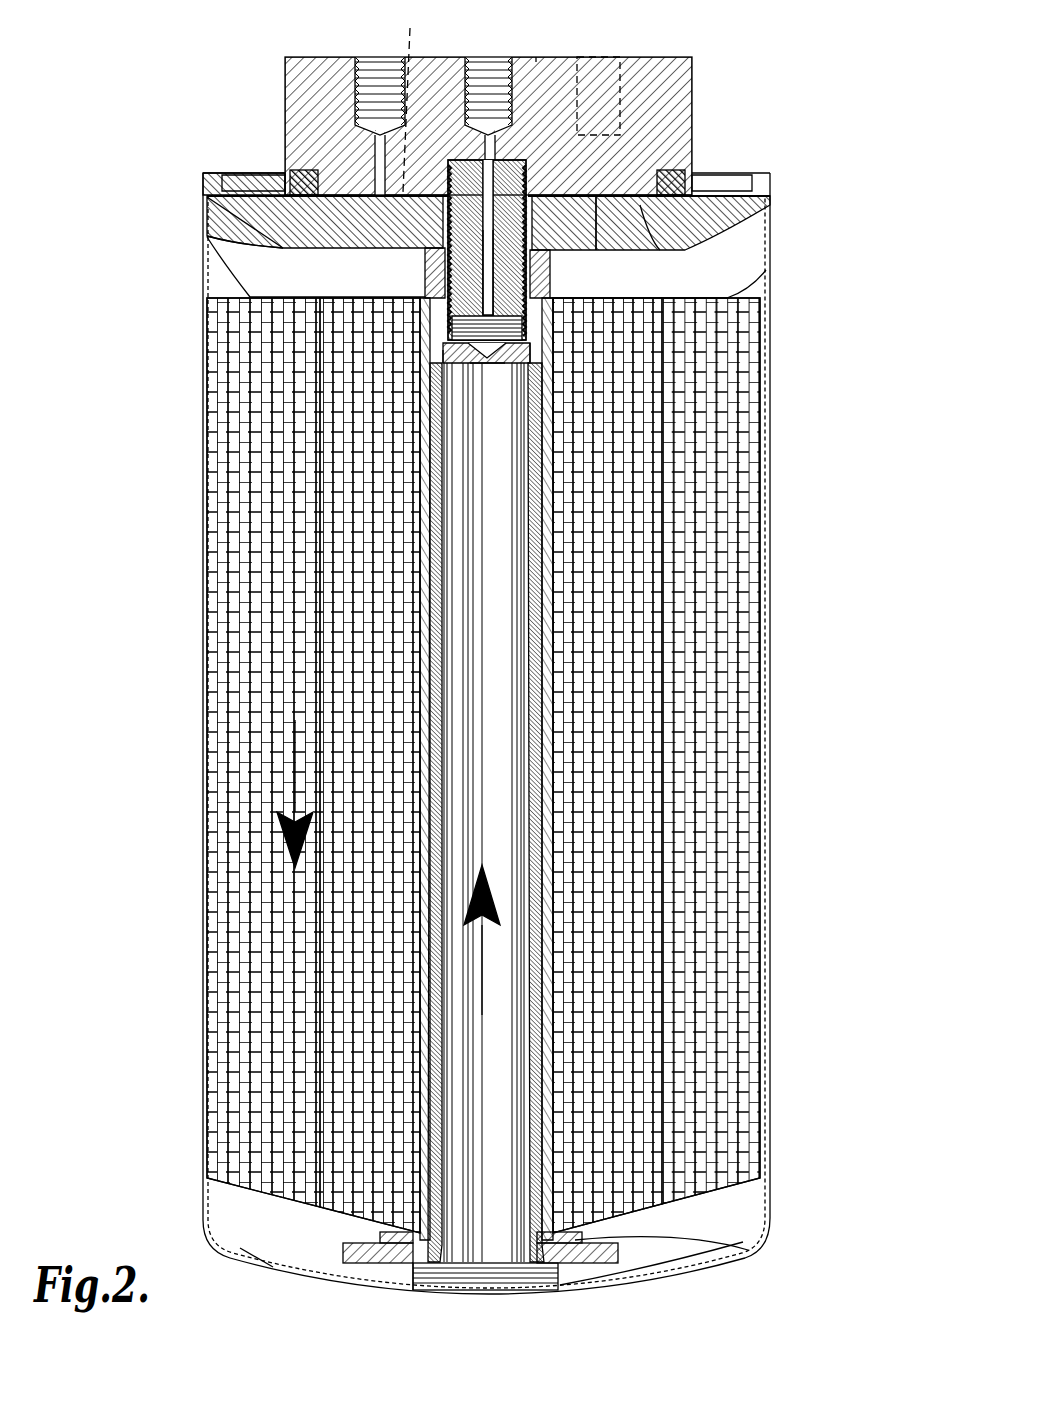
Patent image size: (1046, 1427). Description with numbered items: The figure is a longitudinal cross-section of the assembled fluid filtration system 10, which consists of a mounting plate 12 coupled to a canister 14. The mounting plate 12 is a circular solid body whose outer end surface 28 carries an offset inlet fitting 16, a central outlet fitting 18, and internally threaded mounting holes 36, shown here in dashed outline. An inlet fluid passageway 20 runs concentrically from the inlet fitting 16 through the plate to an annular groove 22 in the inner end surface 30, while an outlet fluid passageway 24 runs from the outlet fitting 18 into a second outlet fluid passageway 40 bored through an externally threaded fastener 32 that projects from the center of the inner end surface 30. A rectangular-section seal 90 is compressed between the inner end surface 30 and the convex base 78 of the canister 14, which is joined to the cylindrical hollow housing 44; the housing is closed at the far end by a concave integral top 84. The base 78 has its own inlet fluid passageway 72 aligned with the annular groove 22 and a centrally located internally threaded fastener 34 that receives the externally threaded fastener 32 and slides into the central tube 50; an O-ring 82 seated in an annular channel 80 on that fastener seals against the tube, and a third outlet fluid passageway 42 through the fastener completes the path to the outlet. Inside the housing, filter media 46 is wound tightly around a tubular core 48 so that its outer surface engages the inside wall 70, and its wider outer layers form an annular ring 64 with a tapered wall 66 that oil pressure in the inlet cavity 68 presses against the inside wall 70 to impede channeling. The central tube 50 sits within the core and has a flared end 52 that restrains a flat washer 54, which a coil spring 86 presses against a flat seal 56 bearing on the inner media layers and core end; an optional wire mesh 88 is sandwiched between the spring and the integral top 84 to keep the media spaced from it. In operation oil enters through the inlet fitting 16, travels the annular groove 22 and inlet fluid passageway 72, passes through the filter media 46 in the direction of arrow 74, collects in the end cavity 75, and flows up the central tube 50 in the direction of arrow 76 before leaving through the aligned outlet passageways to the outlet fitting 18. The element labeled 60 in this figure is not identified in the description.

The fluid filtration system 10 is at (182, 60).
The mounting plate 12 is at (690, 78).
The canister 14 is at (772, 632).
The inlet fitting 16 is at (376, 70).
The outlet fitting 18 is at (483, 70).
The inlet fluid passageway 20 is at (380, 155).
The annular groove 22 is at (409, 96).
The outlet fluid passageway 24 is at (492, 150).
The outer end surface 28 is at (537, 57).
The inner end surface 30 is at (735, 258).
The externally threaded fastener 32 is at (456, 162).
The internally threaded fastener 34 is at (535, 320).
The mounting holes 36 is at (598, 65).
The second outlet fluid passageway 40 is at (494, 270).
The third outlet fluid passageway 42 is at (490, 368).
The hollow housing 44 is at (770, 705).
The filter media 46 is at (765, 825).
The tubular core 48 is at (548, 560).
The central tube 50 is at (435, 655).
The flared end 52 is at (545, 1270).
The flat washer 54 is at (720, 1262).
The flat seal 56 is at (600, 1238).
The filter media 60 is at (295, 1080).
The annular ring 64 is at (235, 283).
The tapered wall 66 is at (240, 285).
The inlet cavity 68 is at (710, 278).
The inside wall 70 is at (235, 570).
The inlet fluid passageway 72 is at (640, 218).
The arrow 74 is at (295, 765).
The end cavity 75 is at (215, 1208).
The arrow 76 is at (490, 932).
The base 78 is at (225, 178).
The annular channel 80 is at (540, 342).
The O-ring 82 is at (443, 356).
The integral top 84 is at (595, 1288).
The coil spring 86 is at (418, 1270).
The wire mesh 88 is at (272, 1270).
The seal 90 is at (675, 185).